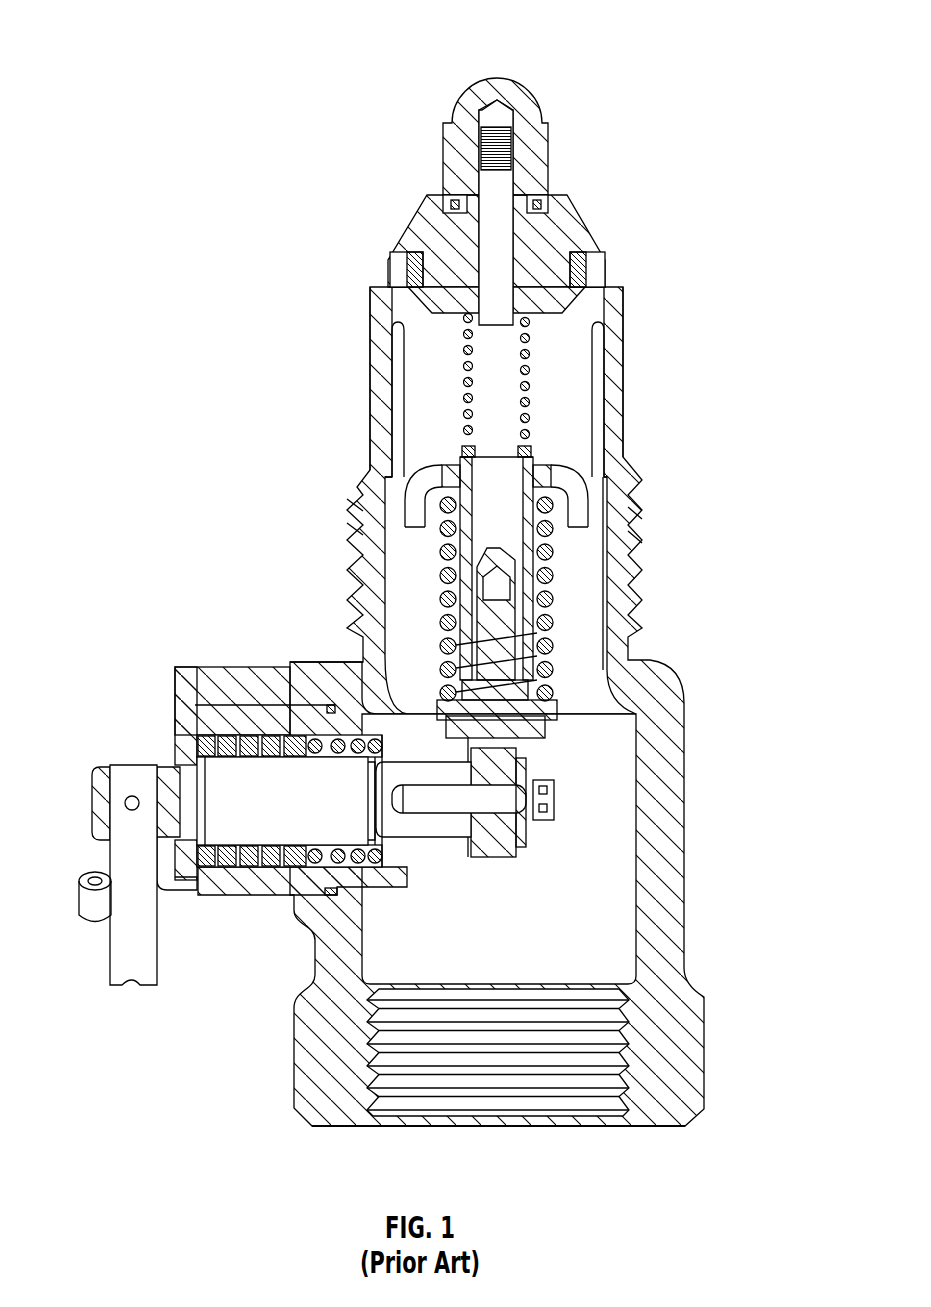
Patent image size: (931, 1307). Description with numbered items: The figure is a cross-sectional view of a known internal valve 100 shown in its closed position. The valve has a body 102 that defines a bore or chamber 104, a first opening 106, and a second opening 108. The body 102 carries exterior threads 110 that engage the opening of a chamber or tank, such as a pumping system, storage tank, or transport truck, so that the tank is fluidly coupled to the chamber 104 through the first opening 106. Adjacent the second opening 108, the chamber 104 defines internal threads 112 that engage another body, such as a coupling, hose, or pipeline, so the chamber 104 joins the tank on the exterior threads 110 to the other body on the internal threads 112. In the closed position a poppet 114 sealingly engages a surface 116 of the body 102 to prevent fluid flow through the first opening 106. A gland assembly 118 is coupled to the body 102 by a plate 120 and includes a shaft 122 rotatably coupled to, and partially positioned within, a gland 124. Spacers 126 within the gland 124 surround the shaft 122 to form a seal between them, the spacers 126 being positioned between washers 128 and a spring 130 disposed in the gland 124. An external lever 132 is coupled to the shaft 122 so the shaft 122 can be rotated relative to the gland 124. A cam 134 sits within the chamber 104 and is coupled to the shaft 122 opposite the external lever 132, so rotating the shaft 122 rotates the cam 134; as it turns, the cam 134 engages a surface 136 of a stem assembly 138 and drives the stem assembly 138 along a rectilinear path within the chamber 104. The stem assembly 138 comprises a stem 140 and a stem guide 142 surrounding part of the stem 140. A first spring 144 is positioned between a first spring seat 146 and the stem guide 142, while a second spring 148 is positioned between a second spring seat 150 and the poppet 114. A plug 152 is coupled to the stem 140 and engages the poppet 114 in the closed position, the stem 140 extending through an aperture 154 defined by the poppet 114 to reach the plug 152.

The internal valve 100 is at (278, 42).
The body 102 is at (660, 860).
The chamber 104 is at (655, 730).
The first opening 106 is at (390, 300).
The second opening 108 is at (612, 1145).
The exterior threads 110 is at (640, 520).
The internal threads 112 is at (420, 1078).
The poppet 114 is at (408, 240).
The surface 116 is at (390, 275).
The gland assembly 118 is at (150, 635).
The plate 120 is at (178, 683).
The shaft 122 is at (225, 790).
The gland 124 is at (222, 900).
The spacers 126 is at (250, 735).
The washers 128 is at (290, 735).
The spring 130 is at (360, 735).
The external lever 132 is at (130, 980).
The cam 134 is at (560, 835).
The surface 136 is at (615, 745).
The stem assembly 138 is at (575, 620).
The stem 140 is at (500, 440).
The stem guide 142 is at (450, 563).
The first spring 144 is at (487, 605).
The first spring seat 146 is at (455, 695).
The second spring 148 is at (527, 382).
The second spring seat 150 is at (460, 452).
The plug 152 is at (470, 95).
The aperture 154 is at (497, 215).